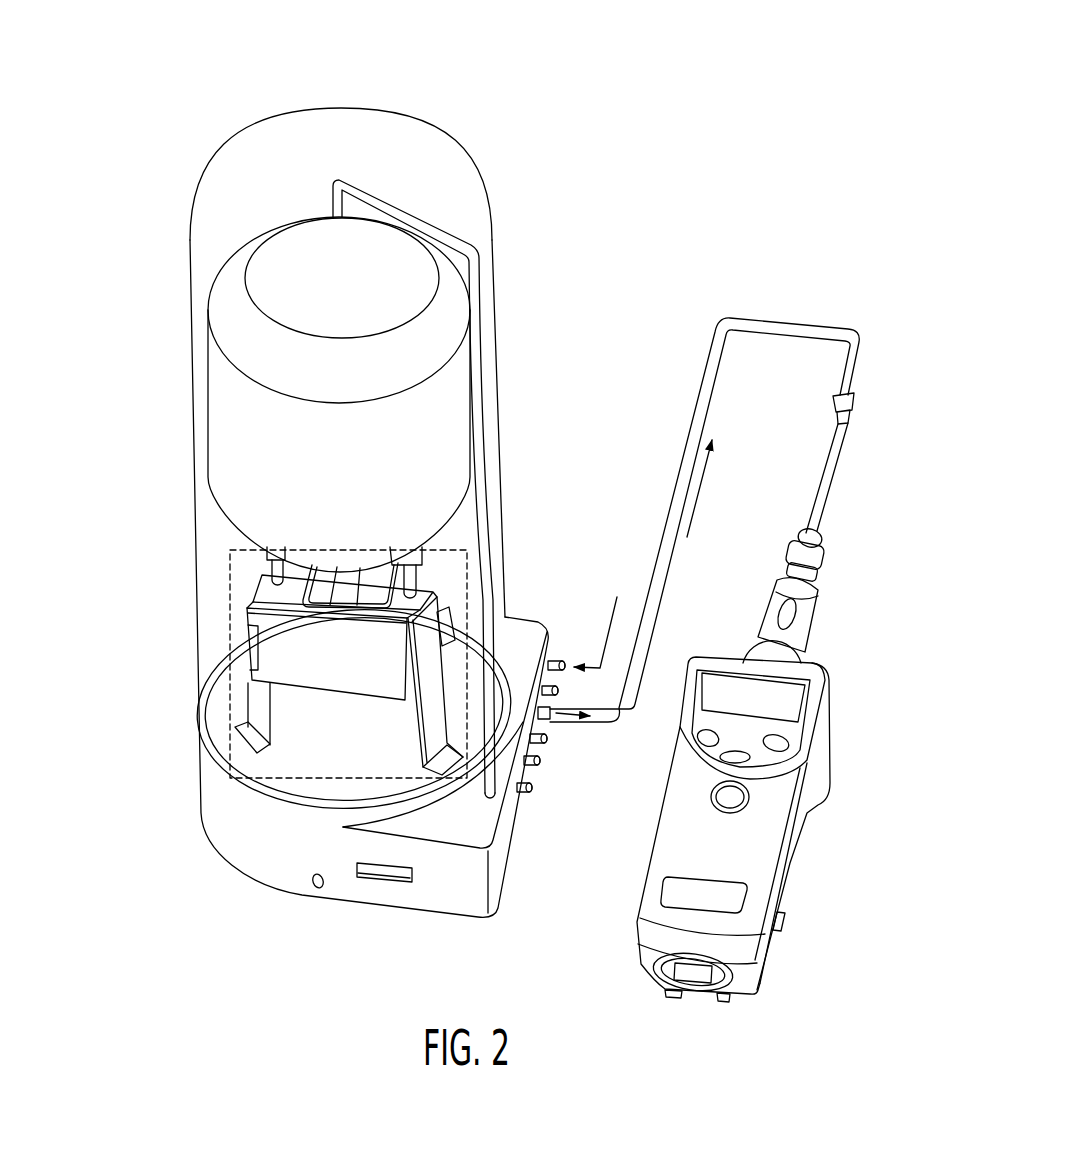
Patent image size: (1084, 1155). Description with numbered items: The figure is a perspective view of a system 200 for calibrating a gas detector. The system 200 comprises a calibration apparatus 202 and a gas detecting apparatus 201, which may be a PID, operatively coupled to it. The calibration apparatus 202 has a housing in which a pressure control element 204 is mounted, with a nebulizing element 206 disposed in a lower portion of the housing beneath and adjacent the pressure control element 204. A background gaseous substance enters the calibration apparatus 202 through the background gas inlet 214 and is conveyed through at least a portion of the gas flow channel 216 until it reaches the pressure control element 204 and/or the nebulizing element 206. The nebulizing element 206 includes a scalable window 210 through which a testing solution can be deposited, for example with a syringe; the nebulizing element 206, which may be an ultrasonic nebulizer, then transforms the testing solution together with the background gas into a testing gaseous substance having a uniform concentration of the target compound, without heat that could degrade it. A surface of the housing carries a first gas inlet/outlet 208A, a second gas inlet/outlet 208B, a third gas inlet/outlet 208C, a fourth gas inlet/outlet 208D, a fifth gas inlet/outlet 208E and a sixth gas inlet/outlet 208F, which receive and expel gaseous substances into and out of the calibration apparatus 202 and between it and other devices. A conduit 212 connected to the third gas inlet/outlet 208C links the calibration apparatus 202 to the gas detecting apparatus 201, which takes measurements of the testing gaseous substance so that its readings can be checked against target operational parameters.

The system 200 is at (669, 70).
The gas detecting apparatus 201 is at (731, 855).
The calibration apparatus 202 is at (212, 114).
The pressure control element 204 is at (356, 382).
The nebulizing element 206 is at (232, 617).
The first gas inlet/outlet 208A is at (566, 658).
The second gas inlet/outlet 208B is at (560, 693).
The third gas inlet/outlet 208C is at (548, 716).
The fourth gas inlet/outlet 208D is at (542, 745).
The fifth gas inlet/outlet 208E is at (537, 764).
The sixth gas inlet/outlet 208F is at (529, 792).
The scalable window 210 is at (346, 669).
The conduit 212 is at (787, 327).
The background gas inlet 214 is at (324, 886).
The gas flow channel 216 is at (482, 408).